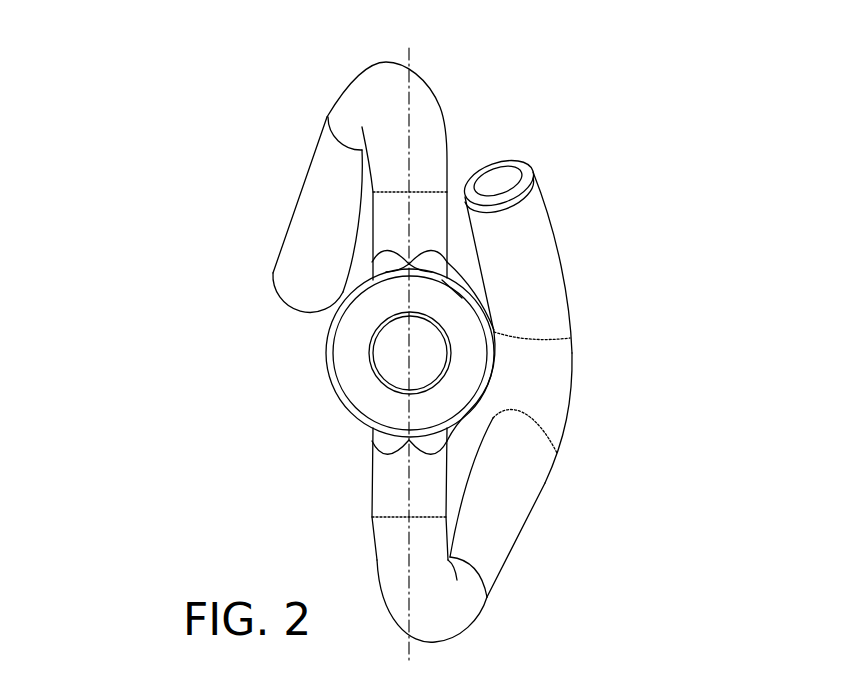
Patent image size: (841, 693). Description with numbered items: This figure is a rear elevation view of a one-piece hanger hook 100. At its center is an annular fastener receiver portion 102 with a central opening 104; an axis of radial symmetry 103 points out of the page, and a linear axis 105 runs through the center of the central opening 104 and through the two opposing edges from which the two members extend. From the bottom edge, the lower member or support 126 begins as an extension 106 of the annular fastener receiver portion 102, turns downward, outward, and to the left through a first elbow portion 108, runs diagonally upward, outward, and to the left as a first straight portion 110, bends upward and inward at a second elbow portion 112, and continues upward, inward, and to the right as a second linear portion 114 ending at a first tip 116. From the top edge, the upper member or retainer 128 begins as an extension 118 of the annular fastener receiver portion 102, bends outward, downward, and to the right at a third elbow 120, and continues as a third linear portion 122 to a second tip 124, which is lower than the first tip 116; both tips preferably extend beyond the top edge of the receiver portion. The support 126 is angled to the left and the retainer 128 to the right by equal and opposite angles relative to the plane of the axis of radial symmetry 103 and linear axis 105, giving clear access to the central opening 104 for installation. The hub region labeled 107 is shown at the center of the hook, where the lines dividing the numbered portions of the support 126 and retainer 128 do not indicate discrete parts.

The hanger hook 100 is at (170, 62).
The annular fastener receiver portion 102 is at (343, 337).
The axis of radial symmetry 103 is at (418, 353).
The central opening 104 is at (394, 380).
The linear axis 105 is at (409, 58).
The extension 106 is at (384, 492).
The hub 107 is at (338, 430).
The first elbow portion 108 is at (386, 563).
The first straight portion 110 is at (506, 527).
The second elbow portion 112 is at (560, 375).
The second linear portion 114 is at (543, 213).
The first tip 116 is at (510, 178).
The extension 118 is at (427, 222).
The third elbow 120 is at (363, 83).
The third linear portion 122 is at (310, 209).
The second tip 124 is at (297, 307).
The support 126 is at (612, 322).
The retainer 128 is at (268, 164).